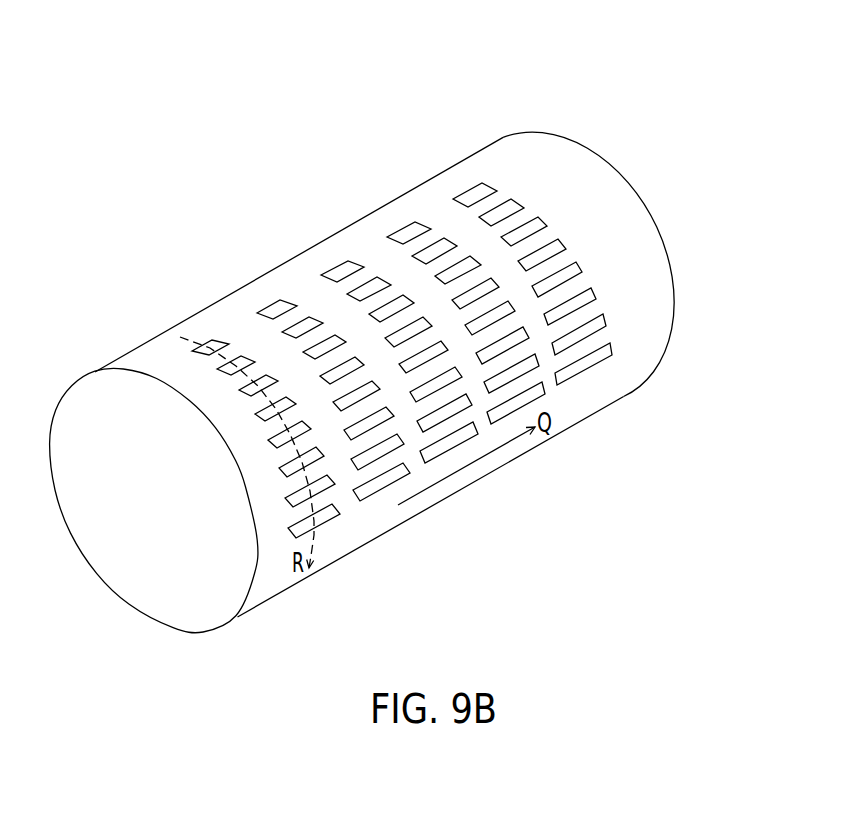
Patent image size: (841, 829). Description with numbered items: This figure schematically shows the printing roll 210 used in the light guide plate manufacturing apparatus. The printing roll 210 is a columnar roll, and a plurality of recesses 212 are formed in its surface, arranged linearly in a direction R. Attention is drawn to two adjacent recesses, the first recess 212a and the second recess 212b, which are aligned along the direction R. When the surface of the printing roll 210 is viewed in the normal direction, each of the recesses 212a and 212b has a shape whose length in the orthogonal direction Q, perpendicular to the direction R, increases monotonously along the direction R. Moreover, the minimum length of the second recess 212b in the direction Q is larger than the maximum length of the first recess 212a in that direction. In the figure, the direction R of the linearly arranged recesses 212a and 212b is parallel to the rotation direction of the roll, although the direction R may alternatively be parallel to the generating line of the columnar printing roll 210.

The printing roll 210 is at (478, 95).
The recesses 212 is at (597, 369).
The first recess 212a is at (562, 251).
The second recess 212b is at (581, 266).